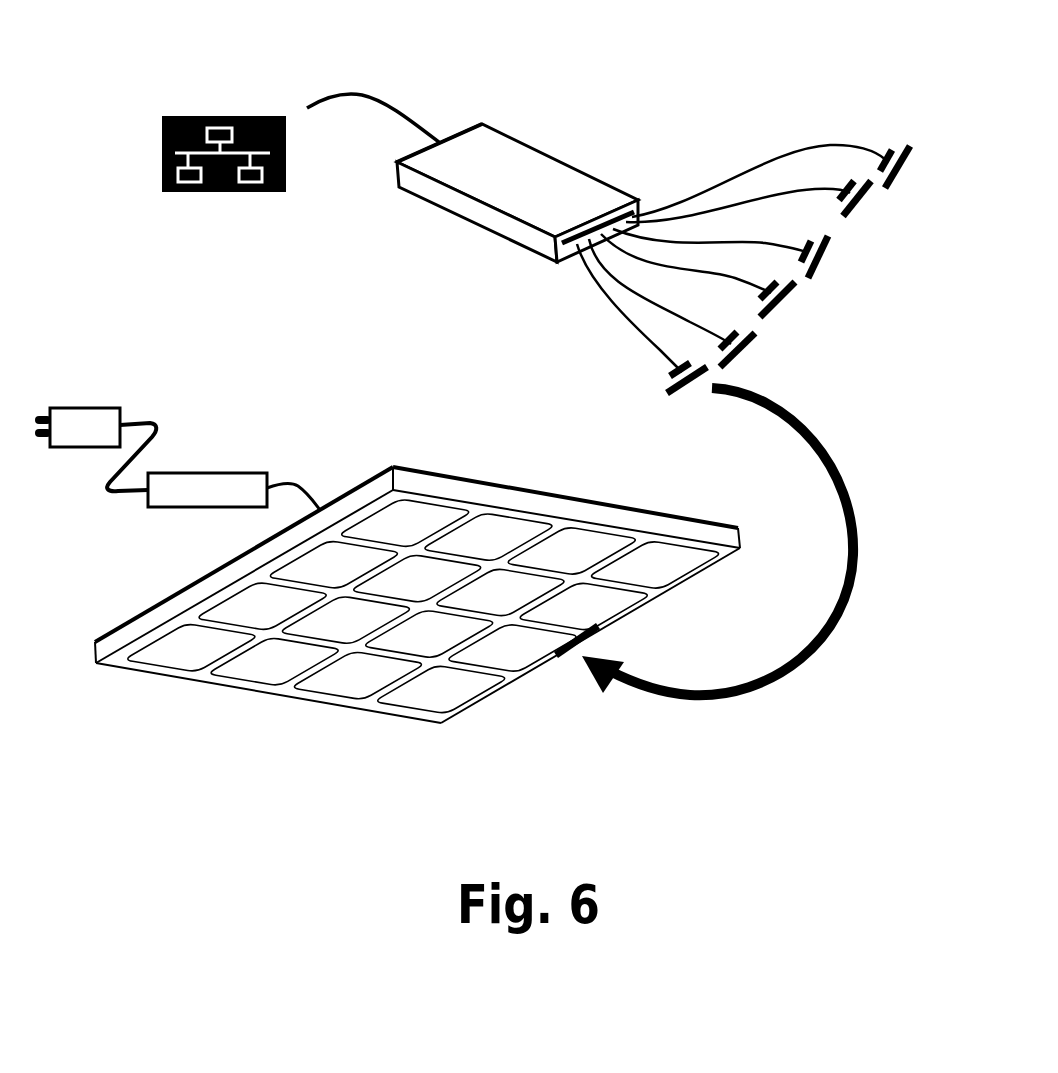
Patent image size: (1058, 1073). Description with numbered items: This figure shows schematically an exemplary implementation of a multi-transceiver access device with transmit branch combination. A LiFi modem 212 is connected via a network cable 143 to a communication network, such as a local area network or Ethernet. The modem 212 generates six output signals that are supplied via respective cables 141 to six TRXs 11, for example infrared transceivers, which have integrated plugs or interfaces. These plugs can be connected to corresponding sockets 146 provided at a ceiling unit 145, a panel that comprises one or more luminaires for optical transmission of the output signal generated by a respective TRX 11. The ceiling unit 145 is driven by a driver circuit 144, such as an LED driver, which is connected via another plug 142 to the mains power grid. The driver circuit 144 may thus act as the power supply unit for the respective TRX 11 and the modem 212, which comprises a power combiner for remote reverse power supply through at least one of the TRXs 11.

The TRXs 11 is at (903, 140).
The cables 141 is at (687, 207).
The plug 142 is at (95, 449).
The network cable 143 is at (307, 108).
The driver circuit 144 is at (234, 491).
The ceiling unit 145 is at (442, 475).
The socket 146 is at (594, 640).
The LiFi modem 212 is at (490, 148).